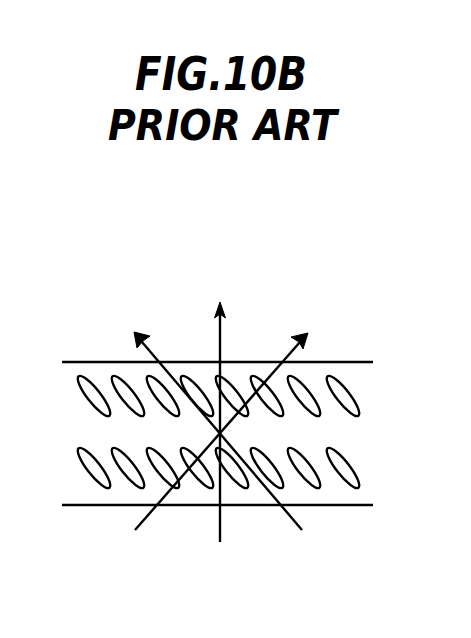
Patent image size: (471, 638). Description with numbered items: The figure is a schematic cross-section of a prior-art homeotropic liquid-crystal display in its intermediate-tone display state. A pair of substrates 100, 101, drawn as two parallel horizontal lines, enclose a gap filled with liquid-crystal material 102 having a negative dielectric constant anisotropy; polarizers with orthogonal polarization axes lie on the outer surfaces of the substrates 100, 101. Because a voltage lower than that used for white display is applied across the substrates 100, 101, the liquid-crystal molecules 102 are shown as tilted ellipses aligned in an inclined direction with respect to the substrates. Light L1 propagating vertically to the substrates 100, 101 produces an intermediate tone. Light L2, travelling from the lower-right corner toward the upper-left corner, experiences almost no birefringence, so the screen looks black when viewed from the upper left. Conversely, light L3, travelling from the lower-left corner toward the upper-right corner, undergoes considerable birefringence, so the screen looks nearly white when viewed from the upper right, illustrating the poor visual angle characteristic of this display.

The substrate 100 is at (352, 361).
The substrate 101 is at (350, 506).
The liquid-crystal molecules 102 is at (356, 396).
The light L1 is at (218, 331).
The light L2 is at (149, 349).
The light L3 is at (292, 356).